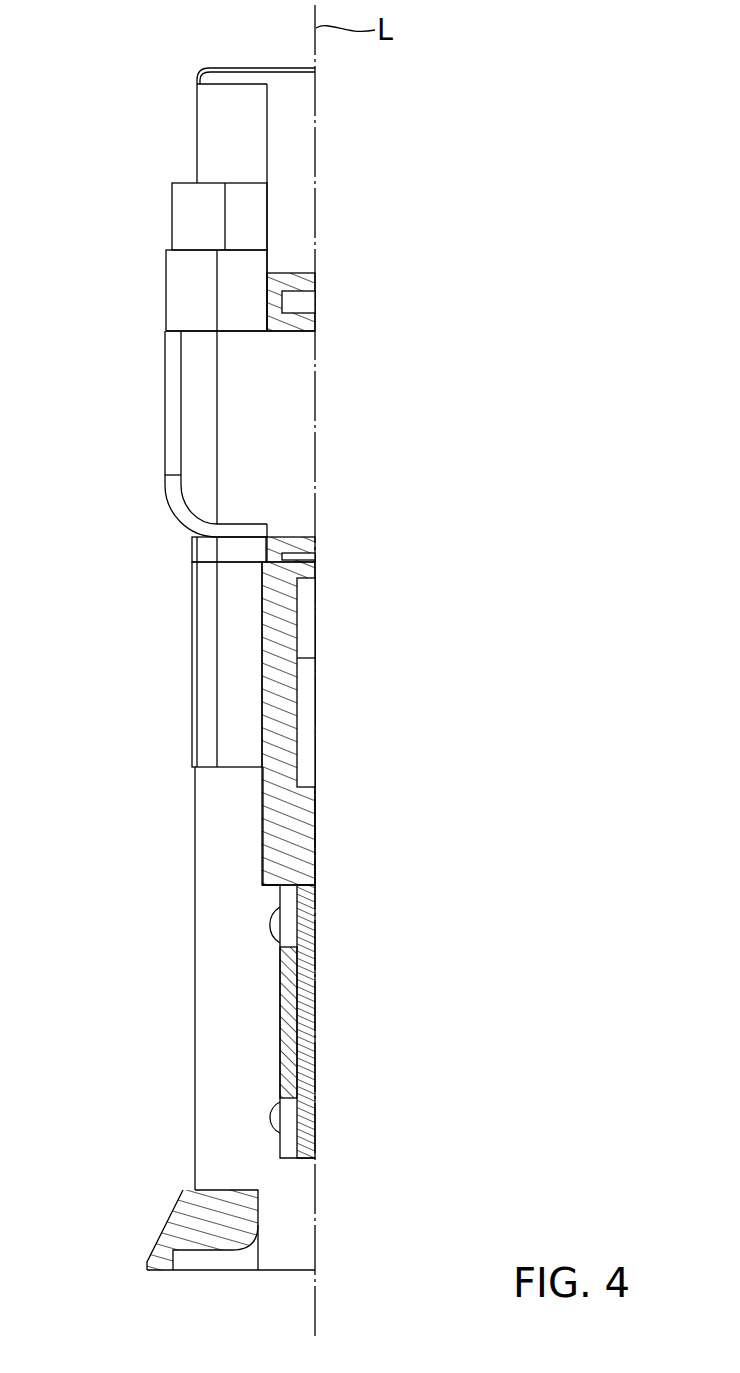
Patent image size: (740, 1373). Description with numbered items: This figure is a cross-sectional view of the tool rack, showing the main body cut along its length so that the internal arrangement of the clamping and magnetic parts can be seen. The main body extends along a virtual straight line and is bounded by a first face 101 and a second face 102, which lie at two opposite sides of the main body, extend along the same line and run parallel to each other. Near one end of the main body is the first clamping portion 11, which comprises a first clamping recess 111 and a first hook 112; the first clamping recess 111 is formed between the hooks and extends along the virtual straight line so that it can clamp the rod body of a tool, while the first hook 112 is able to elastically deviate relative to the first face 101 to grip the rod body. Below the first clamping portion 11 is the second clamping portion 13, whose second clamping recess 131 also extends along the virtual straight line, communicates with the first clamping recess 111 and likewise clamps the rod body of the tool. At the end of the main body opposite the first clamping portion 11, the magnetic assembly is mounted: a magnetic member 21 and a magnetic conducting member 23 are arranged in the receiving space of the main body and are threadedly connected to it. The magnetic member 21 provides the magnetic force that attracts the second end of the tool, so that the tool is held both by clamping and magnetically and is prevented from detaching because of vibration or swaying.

The first clamping portion 11 is at (127, 383).
The first clamping recess 111 is at (187, 455).
The first hook 112 is at (172, 412).
The second clamping portion 13 is at (160, 697).
The second clamping recess 131 is at (230, 648).
The first face 101 is at (263, 831).
The second face 102 is at (314, 832).
The magnetic member 21 is at (288, 1083).
The magnetic conducting member 23 is at (305, 1001).